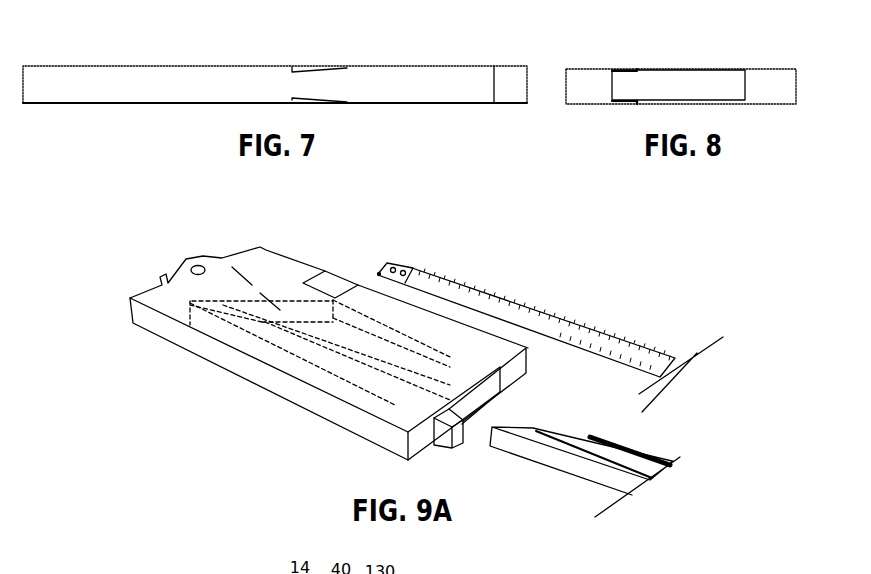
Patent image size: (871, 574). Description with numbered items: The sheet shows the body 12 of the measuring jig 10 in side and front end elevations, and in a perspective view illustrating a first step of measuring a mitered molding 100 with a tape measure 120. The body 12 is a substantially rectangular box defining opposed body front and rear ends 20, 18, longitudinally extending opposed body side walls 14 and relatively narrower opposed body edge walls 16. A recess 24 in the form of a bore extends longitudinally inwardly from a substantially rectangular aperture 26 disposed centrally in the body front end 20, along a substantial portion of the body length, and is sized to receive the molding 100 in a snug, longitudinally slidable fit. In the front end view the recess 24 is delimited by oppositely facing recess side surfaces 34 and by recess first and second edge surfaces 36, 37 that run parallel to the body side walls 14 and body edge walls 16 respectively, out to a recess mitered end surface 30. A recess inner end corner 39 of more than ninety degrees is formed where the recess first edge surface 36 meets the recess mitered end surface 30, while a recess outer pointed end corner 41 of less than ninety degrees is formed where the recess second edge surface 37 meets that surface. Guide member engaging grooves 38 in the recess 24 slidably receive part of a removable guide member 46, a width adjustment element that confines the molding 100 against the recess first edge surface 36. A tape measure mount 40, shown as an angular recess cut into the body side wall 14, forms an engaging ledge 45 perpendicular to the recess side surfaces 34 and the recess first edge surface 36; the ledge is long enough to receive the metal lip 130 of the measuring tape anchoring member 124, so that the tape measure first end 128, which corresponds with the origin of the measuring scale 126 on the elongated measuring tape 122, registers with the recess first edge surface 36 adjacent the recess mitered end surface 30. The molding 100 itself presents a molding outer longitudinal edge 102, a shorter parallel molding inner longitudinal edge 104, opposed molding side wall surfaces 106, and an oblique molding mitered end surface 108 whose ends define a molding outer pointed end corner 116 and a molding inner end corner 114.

In FIG. 9A, the measuring jig 10 is at (143, 430).
In FIG. 7, the body 12 is at (258, 57).
In FIG. 8, the body 12 is at (697, 55).
In FIG. 9A, the body 12 is at (193, 354).
In FIG. 7, the body side walls 14 is at (370, 66).
In FIG. 8, the body side walls 14 is at (742, 68).
In FIG. 9A, the body side walls 14 is at (263, 268).
In FIG. 7, the body edge walls 16 is at (404, 93).
In FIG. 8, the body edge walls 16 is at (567, 90).
In FIG. 9A, the body edge walls 16 is at (362, 432).
In FIG. 7, the body rear end 18 is at (527, 90).
In FIG. 9A, the body rear end 18 is at (183, 265).
In FIG. 7, the body front end 20 is at (23, 88).
In FIG. 8, the body front end 20 is at (785, 95).
In FIG. 9A, the body front end 20 is at (408, 452).
In FIG. 8, the recess 24 is at (725, 94).
In FIG. 9A, the recess 24 is at (478, 397).
In FIG. 9A, the aperture 26 is at (486, 380).
In FIG. 8, the recess mitered end surface 30 is at (625, 93).
In FIG. 9A, the recess mitered end surface 30 is at (227, 258).
In FIG. 8, the recess side surfaces 34 is at (683, 98).
In FIG. 8, the recess first edge surface 36 is at (745, 82).
In FIG. 9A, the recess first edge surface 36 is at (428, 358).
In FIG. 8, the recess second edge surface 37 is at (610, 88).
In FIG. 9A, the recess second edge surface 37 is at (285, 394).
In FIG. 8, the guide member engaging grooves 38 is at (635, 71).
In FIG. 9A, the recess inner end corner 39 is at (365, 303).
In FIG. 7, the tape measure mount 40 is at (309, 68).
In FIG. 9A, the tape measure mount 40 is at (332, 282).
In FIG. 9A, the recess outer pointed end corner 41 is at (147, 301).
In FIG. 7, the engaging ledge 45 is at (294, 66).
In FIG. 9A, the engaging ledge 45 is at (350, 290).
In FIG. 9A, the guide member 46 is at (447, 447).
In FIG. 9A, the mitered molding 100 is at (630, 435).
In FIG. 9A, the molding outer longitudinal edge 102 is at (588, 480).
In FIG. 9A, the molding inner longitudinal edge 104 is at (662, 460).
In FIG. 9A, the molding side wall surfaces 106 is at (565, 455).
In FIG. 9A, the molding mitered end surface 108 is at (545, 432).
In FIG. 9A, the molding inner end corner 114 is at (700, 364).
In FIG. 9A, the molding outer pointed end corner 116 is at (492, 446).
In FIG. 9A, the tape measure 120 is at (590, 328).
In FIG. 9A, the measuring tape 122 is at (522, 313).
In FIG. 9A, the measuring tape anchoring member 124 is at (405, 265).
In FIG. 9A, the measuring scale 126 is at (460, 283).
In FIG. 9A, the tape measure first end 128 is at (391, 268).
In FIG. 9A, the metal lip 130 is at (378, 273).